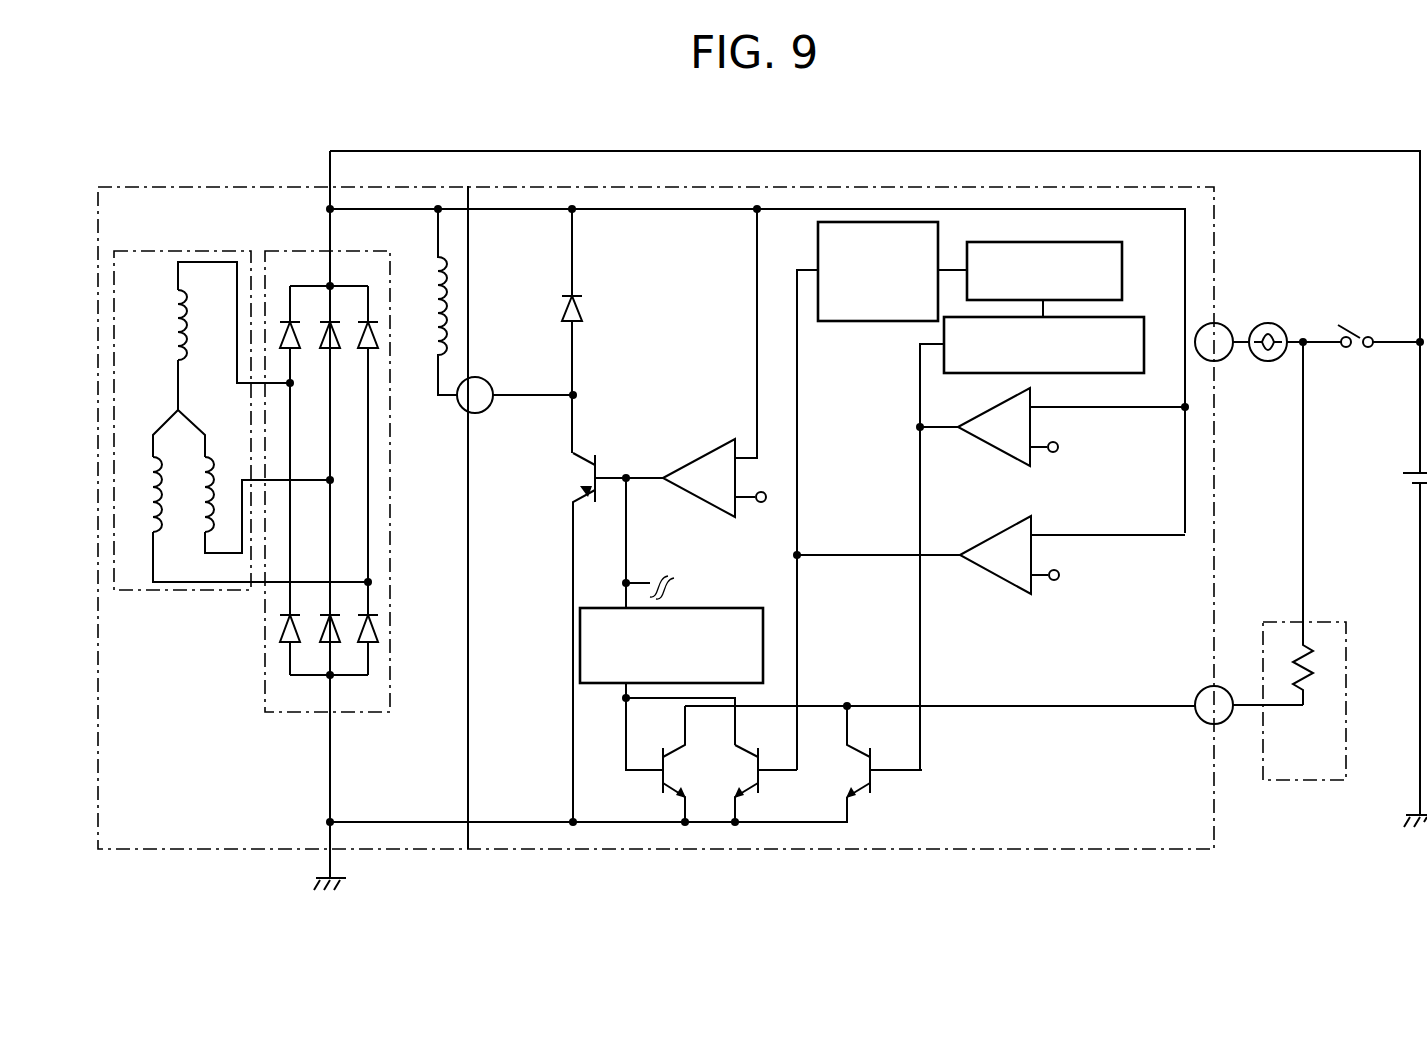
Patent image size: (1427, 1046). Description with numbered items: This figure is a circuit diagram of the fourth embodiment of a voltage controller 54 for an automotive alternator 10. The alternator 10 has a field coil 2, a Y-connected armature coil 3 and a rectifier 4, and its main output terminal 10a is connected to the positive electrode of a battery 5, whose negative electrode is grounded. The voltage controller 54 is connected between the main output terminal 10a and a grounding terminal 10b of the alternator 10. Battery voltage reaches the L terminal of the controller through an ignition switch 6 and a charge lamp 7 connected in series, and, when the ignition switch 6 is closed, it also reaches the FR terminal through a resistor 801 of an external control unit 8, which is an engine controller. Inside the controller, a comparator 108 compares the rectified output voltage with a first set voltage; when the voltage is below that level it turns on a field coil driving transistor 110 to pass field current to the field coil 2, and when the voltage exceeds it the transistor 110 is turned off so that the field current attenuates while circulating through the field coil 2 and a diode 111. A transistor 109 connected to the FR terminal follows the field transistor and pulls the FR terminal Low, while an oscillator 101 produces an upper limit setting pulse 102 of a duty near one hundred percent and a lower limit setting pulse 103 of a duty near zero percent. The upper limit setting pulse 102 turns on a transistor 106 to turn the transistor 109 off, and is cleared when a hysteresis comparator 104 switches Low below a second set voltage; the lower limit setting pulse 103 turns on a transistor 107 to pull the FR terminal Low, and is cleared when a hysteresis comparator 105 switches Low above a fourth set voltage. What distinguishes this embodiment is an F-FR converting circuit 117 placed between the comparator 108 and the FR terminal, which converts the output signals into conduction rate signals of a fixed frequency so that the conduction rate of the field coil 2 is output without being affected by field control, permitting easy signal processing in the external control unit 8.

The automotive alternator 10 is at (180, 186).
The main output terminal 10a is at (330, 209).
The grounding terminal 10b is at (330, 822).
The voltage controller 54 is at (676, 189).
The field coil 2 is at (432, 257).
The armature coil 3 is at (160, 250).
The rectifier 4 is at (285, 250).
The battery 5 is at (1410, 470).
The ignition switch 6 is at (1357, 350).
The charge lamp 7 is at (1268, 362).
The external control unit 8 is at (1298, 782).
The resistor 801 is at (1306, 652).
The oscillator 101 is at (1098, 242).
The upper limit setting pulse 102 is at (940, 242).
The lower limit setting pulse 103 is at (1140, 316).
The comparator 104 is at (1034, 553).
The comparator 105 is at (1000, 410).
The transistor 106 is at (770, 735).
The transistor 107 is at (876, 793).
The comparator 108 is at (692, 452).
The transistor 109 is at (656, 782).
The field coil driving transistor 110 is at (586, 470).
The diode 111 is at (583, 312).
The F-FR converting circuit 117 is at (600, 685).